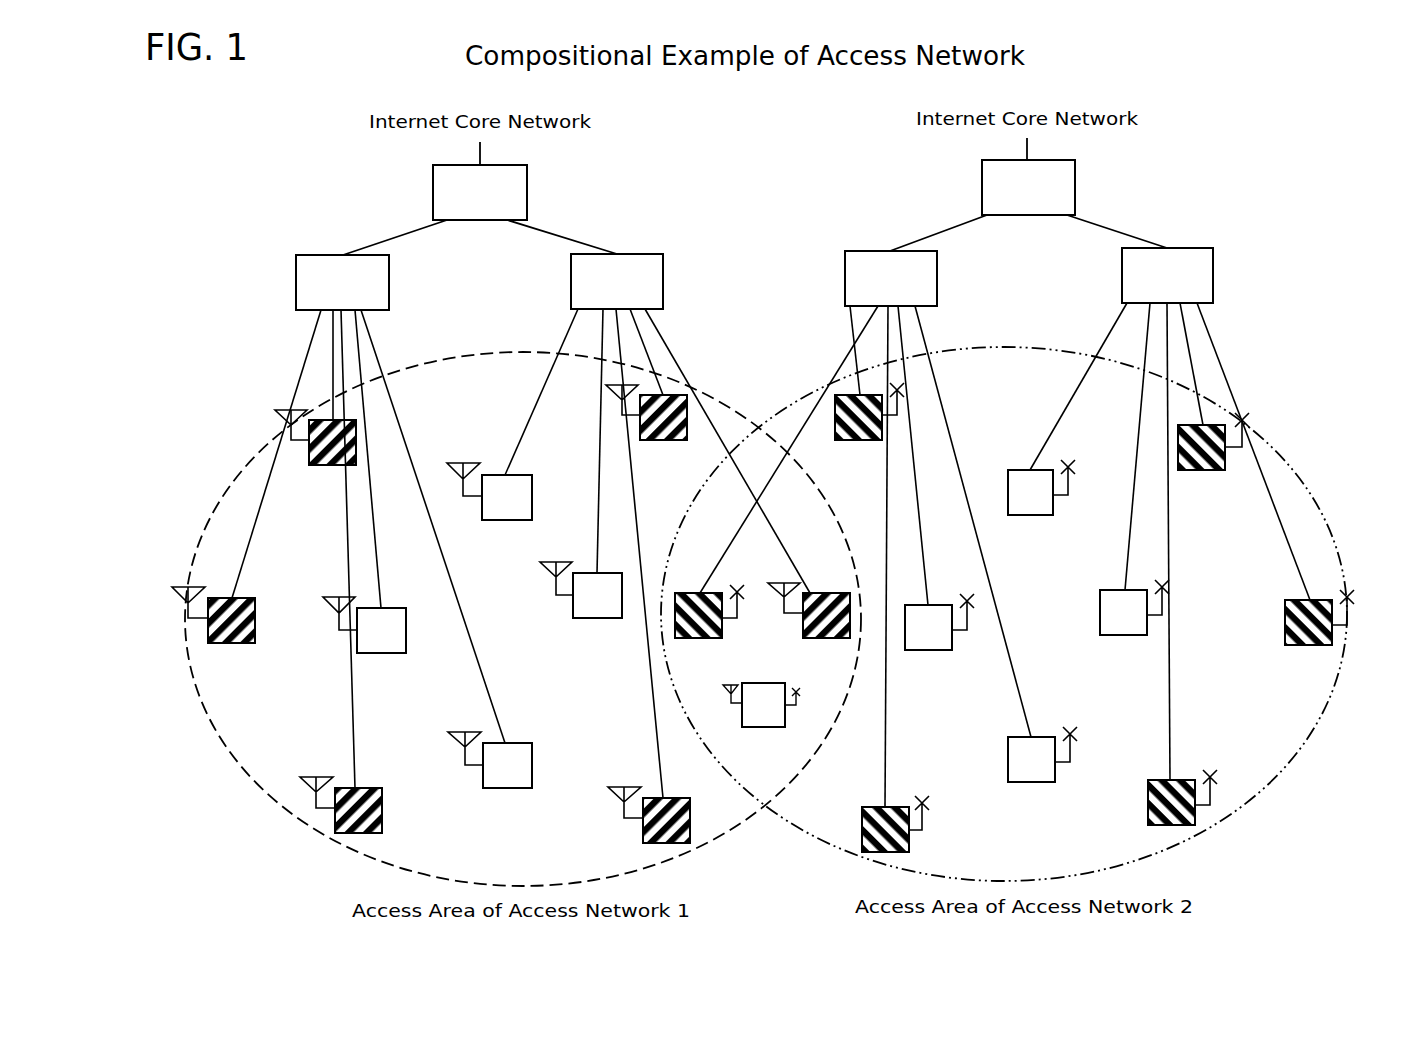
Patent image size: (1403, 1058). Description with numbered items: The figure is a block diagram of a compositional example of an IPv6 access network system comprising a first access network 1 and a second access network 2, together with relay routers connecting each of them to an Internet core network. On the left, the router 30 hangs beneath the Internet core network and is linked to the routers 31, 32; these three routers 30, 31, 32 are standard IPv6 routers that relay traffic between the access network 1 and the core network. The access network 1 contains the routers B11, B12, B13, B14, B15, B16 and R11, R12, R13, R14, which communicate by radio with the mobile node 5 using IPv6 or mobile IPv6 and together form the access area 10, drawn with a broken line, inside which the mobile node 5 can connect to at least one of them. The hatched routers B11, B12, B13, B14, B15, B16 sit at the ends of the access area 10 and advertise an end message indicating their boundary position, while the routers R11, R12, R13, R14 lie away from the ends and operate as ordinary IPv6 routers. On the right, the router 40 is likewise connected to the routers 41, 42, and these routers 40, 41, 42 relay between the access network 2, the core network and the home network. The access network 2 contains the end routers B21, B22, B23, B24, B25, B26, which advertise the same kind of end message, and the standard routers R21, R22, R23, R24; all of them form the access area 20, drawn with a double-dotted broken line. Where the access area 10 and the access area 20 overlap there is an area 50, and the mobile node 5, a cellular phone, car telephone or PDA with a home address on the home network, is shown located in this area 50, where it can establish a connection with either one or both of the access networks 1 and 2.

The access network 1 is at (201, 390).
The access network 2 is at (1275, 390).
The mobile node 5 is at (763, 727).
The access area 10 is at (222, 497).
The access area 20 is at (1298, 478).
The router 30 is at (514, 165).
The router 31 is at (312, 255).
The router 32 is at (645, 254).
The router 40 is at (1063, 160).
The router 41 is at (860, 251).
The router 42 is at (1193, 248).
The overlapping area 50 is at (771, 786).
The router B11 is at (332, 465).
The router B12 is at (211, 643).
The router B13 is at (382, 812).
The router B14 is at (643, 830).
The router B15 is at (840, 640).
The router B16 is at (660, 440).
The router B21 is at (862, 440).
The router B22 is at (693, 640).
The router B23 is at (909, 835).
The router B24 is at (1148, 806).
The router B25 is at (1310, 645).
The router B26 is at (1190, 470).
The router R11 is at (522, 475).
The router R12 is at (397, 608).
The router R13 is at (523, 743).
The router R14 is at (590, 618).
The router R21 is at (1020, 515).
The router R22 is at (918, 650).
The router R23 is at (1023, 782).
The router R24 is at (1130, 635).